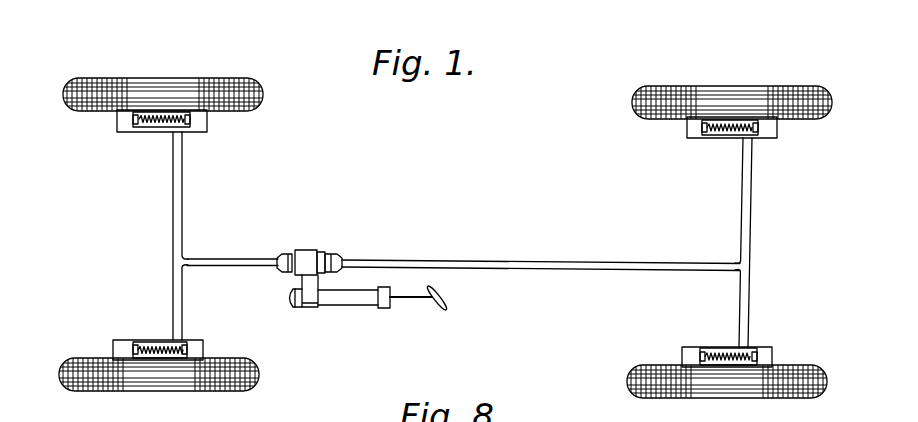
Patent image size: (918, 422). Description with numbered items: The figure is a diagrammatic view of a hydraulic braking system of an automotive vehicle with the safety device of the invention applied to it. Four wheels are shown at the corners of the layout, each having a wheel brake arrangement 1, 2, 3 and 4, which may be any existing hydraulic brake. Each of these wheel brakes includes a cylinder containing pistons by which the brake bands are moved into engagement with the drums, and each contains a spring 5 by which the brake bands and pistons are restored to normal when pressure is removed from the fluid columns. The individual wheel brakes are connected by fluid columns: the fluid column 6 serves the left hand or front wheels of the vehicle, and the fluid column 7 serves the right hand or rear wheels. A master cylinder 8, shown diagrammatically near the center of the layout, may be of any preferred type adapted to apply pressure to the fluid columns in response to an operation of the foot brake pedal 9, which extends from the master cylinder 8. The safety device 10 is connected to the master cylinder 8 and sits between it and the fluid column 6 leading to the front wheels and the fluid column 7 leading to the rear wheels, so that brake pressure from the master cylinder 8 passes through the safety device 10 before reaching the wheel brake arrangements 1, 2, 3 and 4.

The wheel brake arrangement 1 is at (205, 122).
The wheel brake arrangement 2 is at (205, 349).
The wheel brake arrangement 3 is at (690, 130).
The wheel brake arrangement 4 is at (690, 350).
The spring 5 is at (165, 119).
The fluid column 6 is at (172, 205).
The fluid column 7 is at (748, 213).
The master cylinder 8 is at (348, 307).
The foot brake pedal 9 is at (446, 297).
The safety device 10 is at (310, 251).